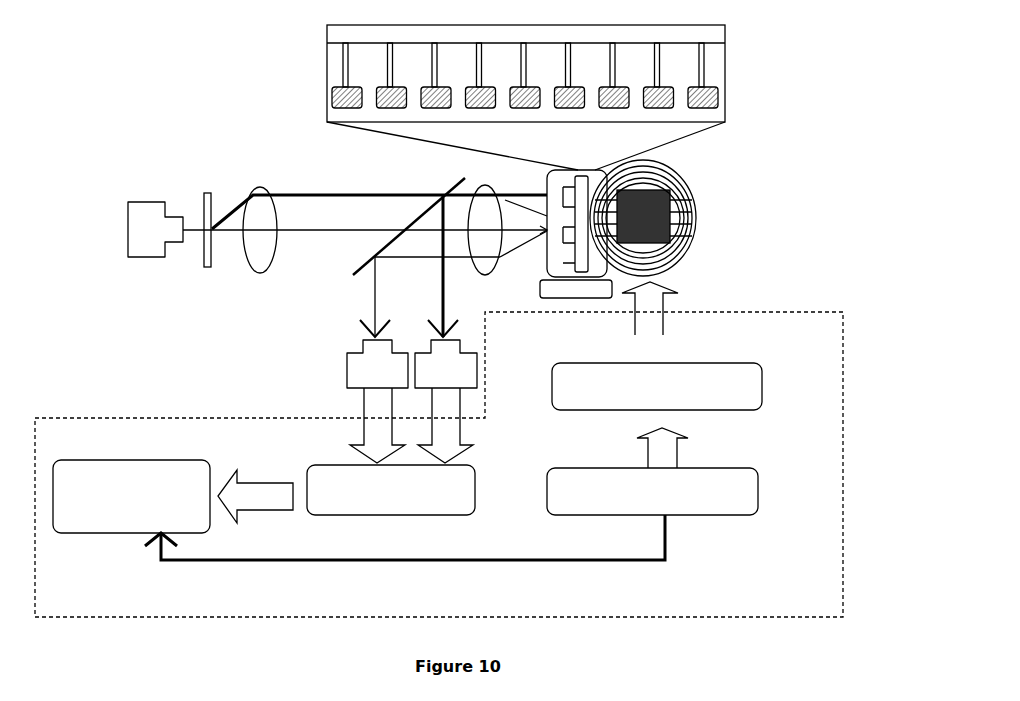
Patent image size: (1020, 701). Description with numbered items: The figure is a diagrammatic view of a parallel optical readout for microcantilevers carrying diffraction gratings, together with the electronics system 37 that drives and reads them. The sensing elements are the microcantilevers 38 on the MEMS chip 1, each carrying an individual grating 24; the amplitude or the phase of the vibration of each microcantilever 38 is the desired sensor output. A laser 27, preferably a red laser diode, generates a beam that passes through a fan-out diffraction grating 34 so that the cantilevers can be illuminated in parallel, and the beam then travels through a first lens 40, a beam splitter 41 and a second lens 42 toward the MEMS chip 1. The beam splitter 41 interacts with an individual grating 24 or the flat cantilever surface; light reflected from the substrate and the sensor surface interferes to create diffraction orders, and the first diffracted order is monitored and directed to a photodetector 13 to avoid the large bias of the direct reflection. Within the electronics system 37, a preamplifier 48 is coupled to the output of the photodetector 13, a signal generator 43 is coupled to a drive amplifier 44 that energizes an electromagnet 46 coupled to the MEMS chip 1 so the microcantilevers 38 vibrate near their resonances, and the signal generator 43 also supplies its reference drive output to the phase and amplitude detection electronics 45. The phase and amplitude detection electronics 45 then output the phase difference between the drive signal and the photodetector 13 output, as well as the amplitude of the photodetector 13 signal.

The MEMS chip 1 is at (540, 292).
The photodetector 13 is at (345, 370).
The grating 24 is at (725, 96).
The laser 27 is at (147, 258).
The fan-out diffraction grating 34 is at (207, 268).
The electronics system 37 is at (843, 512).
The microcantilever 38 is at (703, 86).
The first lens 40 is at (259, 273).
The beam splitter 41 is at (358, 272).
The second lens 42 is at (478, 274).
The signal generator 43 is at (600, 515).
The drive amplifier 44 is at (580, 410).
The phase and amplitude detection electronics 45 is at (130, 533).
The electromagnet 46 is at (682, 212).
The preamplifier 48 is at (393, 515).